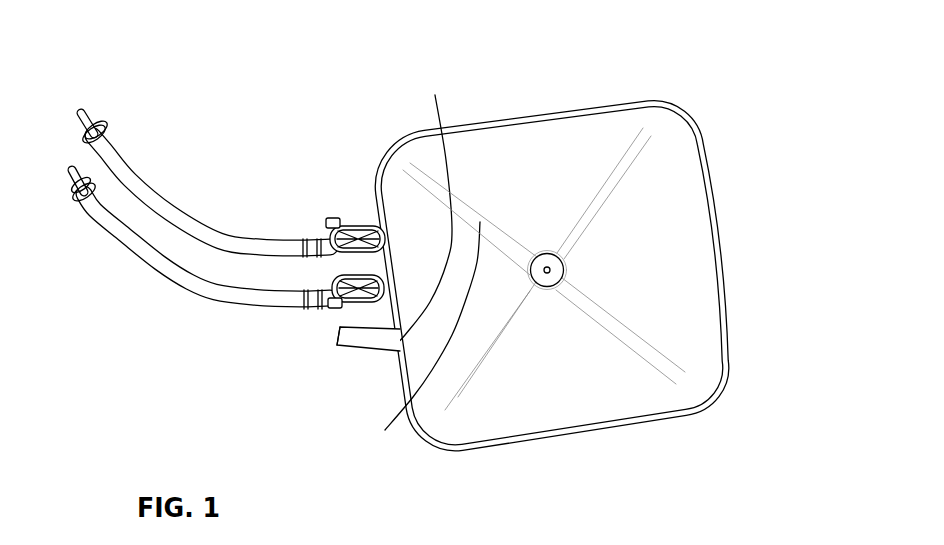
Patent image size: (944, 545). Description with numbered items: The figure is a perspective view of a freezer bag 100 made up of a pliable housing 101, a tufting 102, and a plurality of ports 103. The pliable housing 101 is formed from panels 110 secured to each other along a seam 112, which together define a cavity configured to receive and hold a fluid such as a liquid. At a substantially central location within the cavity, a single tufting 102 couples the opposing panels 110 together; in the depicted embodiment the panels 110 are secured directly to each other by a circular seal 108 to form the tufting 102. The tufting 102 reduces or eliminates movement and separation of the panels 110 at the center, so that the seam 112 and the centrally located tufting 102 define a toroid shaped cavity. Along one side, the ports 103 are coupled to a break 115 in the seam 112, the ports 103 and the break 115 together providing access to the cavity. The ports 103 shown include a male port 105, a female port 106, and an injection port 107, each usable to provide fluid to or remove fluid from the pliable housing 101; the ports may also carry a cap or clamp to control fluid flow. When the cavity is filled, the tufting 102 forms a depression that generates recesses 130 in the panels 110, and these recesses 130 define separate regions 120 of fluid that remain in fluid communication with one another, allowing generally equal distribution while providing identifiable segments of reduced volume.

The freezer bag 100 is at (373, 92).
The pliable housing 101 is at (416, 449).
The tufting 102 is at (553, 278).
The port 103 is at (352, 335).
The male port 105 is at (142, 180).
The female port 106 is at (122, 245).
The injection port 107 is at (372, 352).
The circular seal 108 is at (576, 231).
The panel 110 is at (552, 375).
The seam 112 is at (543, 112).
The break 115 is at (398, 287).
The region 120 is at (523, 168).
The recess 130 is at (623, 160).